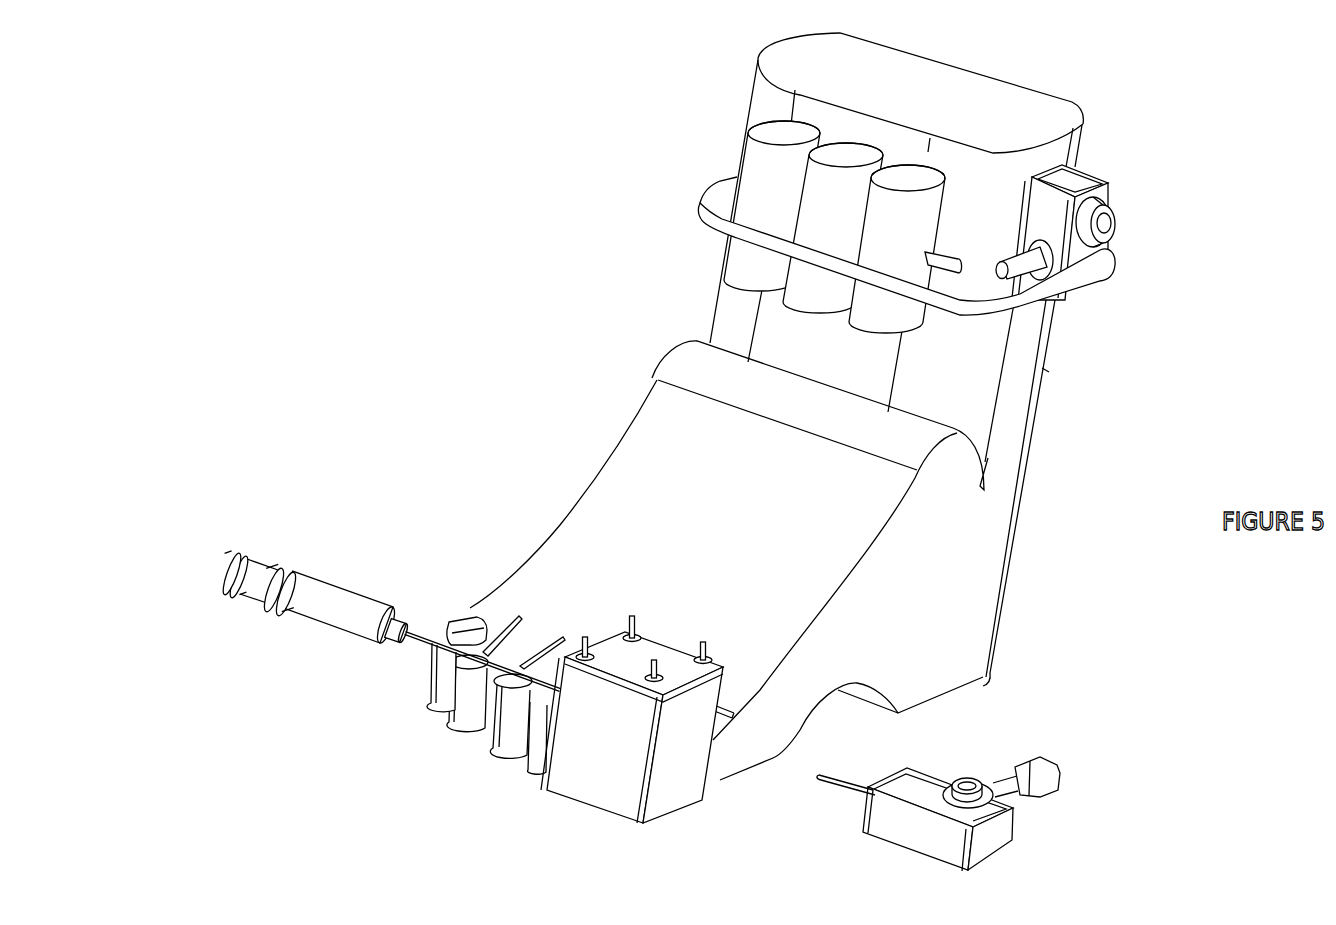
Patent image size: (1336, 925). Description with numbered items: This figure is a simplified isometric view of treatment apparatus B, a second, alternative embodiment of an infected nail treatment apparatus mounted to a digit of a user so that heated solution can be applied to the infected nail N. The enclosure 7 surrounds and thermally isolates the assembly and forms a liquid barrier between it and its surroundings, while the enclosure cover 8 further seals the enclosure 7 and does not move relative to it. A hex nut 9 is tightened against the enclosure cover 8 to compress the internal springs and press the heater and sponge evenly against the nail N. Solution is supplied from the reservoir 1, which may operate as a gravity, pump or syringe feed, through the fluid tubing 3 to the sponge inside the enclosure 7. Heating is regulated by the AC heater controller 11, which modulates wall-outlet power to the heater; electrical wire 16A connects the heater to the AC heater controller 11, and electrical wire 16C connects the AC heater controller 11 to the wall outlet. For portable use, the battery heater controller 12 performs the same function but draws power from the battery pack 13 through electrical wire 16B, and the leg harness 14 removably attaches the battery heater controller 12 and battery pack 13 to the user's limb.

The reservoir 1 is at (328, 632).
The fluid tubing 3 is at (428, 645).
The enclosure 7 is at (577, 808).
The enclosure cover 8 is at (698, 665).
The hex nut 9 is at (632, 627).
The AC heater controller 11 is at (1000, 860).
The battery heater controller 12 is at (1093, 298).
The battery pack 13 is at (747, 130).
The leg harness 14 is at (697, 213).
The electrical wire 16A is at (738, 712).
The electrical wire 16B is at (960, 260).
The electrical wire 16C is at (1048, 369).
The treatment apparatus B is at (510, 370).
The infected nail N is at (460, 622).